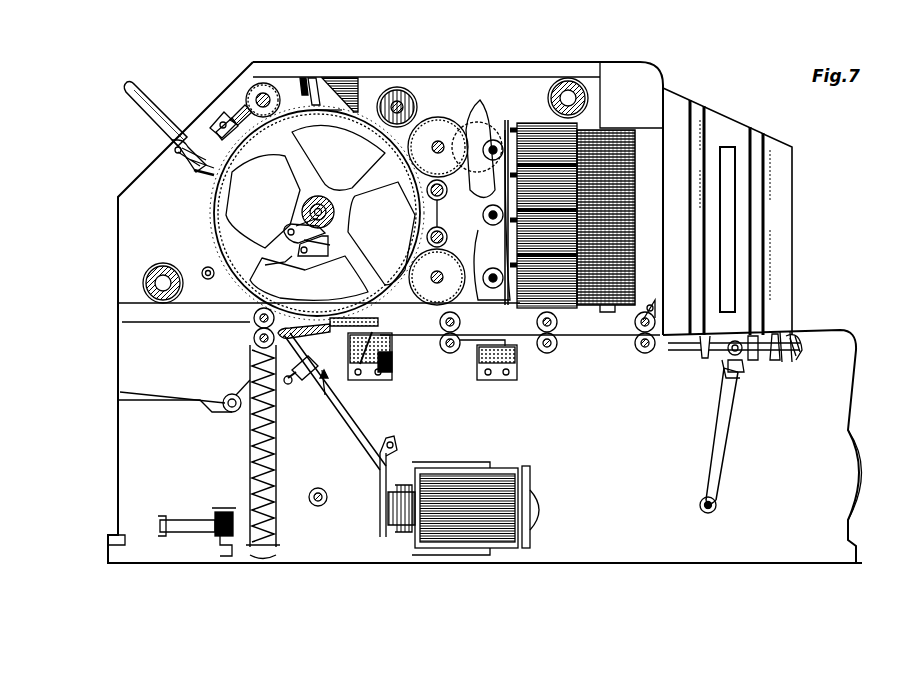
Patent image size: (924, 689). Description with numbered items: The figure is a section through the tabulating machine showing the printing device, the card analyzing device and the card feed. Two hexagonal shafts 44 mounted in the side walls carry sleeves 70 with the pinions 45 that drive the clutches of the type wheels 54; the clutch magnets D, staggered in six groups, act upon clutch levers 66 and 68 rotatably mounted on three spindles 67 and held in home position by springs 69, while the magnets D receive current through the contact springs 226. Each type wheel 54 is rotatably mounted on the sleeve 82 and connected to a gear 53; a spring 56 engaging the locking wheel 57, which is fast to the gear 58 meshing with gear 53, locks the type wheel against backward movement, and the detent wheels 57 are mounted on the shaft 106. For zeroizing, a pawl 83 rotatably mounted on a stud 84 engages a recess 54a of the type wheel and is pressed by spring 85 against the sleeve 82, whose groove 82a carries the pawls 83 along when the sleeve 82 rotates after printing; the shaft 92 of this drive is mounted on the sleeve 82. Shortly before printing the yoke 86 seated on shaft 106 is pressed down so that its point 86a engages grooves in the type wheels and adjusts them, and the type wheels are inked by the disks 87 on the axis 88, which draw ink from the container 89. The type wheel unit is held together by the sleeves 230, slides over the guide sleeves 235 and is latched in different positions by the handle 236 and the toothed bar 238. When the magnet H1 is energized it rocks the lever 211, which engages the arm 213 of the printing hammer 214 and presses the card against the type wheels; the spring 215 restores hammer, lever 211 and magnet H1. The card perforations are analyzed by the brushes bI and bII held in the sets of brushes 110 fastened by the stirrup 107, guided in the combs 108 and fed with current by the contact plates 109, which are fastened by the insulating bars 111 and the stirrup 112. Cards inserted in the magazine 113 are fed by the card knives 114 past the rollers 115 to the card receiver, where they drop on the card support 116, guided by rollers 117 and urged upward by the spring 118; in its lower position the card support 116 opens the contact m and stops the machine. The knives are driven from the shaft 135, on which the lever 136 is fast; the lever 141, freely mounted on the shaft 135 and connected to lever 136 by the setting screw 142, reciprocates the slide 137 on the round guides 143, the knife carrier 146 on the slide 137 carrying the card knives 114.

The pinion 45 is at (437, 236).
The type wheel 54 is at (352, 114).
The recess 54a is at (313, 246).
The sleeve 82 is at (308, 201).
The shaft 92 is at (310, 212).
The groove 82a is at (296, 226).
The pawl 83 is at (286, 232).
The stud 84 is at (300, 248).
The spring 85 is at (274, 266).
The gear 58 is at (263, 84).
The shaft 106 is at (258, 97).
The locking wheel 57 is at (248, 108).
The spring 56 is at (236, 122).
The gear 53 is at (220, 124).
The handle 236 is at (138, 107).
The toothed bar 238 is at (210, 172).
The yoke 86 is at (303, 78).
The point 86a is at (320, 78).
The container 89 is at (358, 92).
The axis 88 is at (402, 92).
The disk 87 is at (398, 100).
The guide sleeve 235 is at (575, 80).
The sleeve 230 is at (562, 80).
The sleeve 70 is at (438, 195).
The shaft 44 is at (441, 240).
The lever 68 is at (470, 130).
The spring 69 is at (481, 120).
The lever 66 is at (494, 137).
The spindle 67 is at (509, 135).
The magnet D is at (541, 125).
The contact spring 226 is at (588, 140).
The magazine 113 is at (805, 168).
The printing hammer 214 is at (254, 332).
The insulating bar 111 is at (470, 340).
The roller 115 is at (642, 352).
The contact plate 109 is at (332, 326).
The comb 108 is at (338, 330).
The stirrup 107 is at (388, 378).
The set of brushes 110 is at (366, 368).
The brush bII is at (392, 362).
The stirrup 112 is at (474, 365).
The brush bI is at (510, 367).
The card support 116 is at (120, 392).
The roller 117 is at (222, 410).
The spring 118 is at (272, 547).
The spring 215 is at (300, 378).
The arm 213 is at (323, 380).
The magnet H1 is at (459, 510).
The lever 211 is at (380, 538).
The contact m is at (172, 538).
The card knife 114 is at (788, 340).
The knife carrier 146 is at (782, 338).
The round guide 143 is at (757, 352).
The slide 137 is at (780, 365).
The setting screw 142 is at (740, 374).
The lever 141 is at (722, 384).
The lever 136 is at (708, 486).
The shaft 135 is at (707, 514).